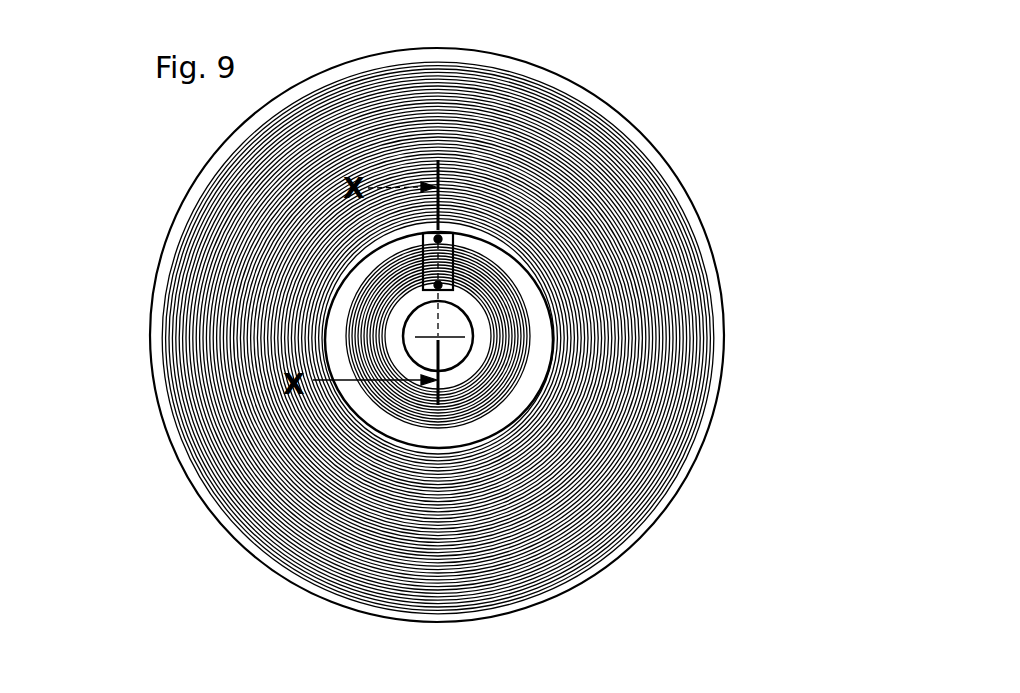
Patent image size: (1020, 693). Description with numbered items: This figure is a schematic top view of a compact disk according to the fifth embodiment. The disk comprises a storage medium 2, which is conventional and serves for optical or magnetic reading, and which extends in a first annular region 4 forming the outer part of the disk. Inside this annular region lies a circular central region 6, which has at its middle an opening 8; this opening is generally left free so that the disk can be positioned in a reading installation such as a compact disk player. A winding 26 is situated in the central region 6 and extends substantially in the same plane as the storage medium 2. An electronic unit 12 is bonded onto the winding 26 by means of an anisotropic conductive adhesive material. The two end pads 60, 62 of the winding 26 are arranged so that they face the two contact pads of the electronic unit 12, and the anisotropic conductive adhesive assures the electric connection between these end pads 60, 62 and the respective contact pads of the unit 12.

The storage medium 2 is at (612, 278).
The first annular region 4 is at (662, 163).
The circular central region 6 is at (372, 432).
The opening 8 is at (450, 352).
The electronic unit 12 is at (443, 232).
The winding 26 is at (358, 333).
The end pad of winding 60 is at (434, 240).
The end pad of winding 62 is at (442, 286).